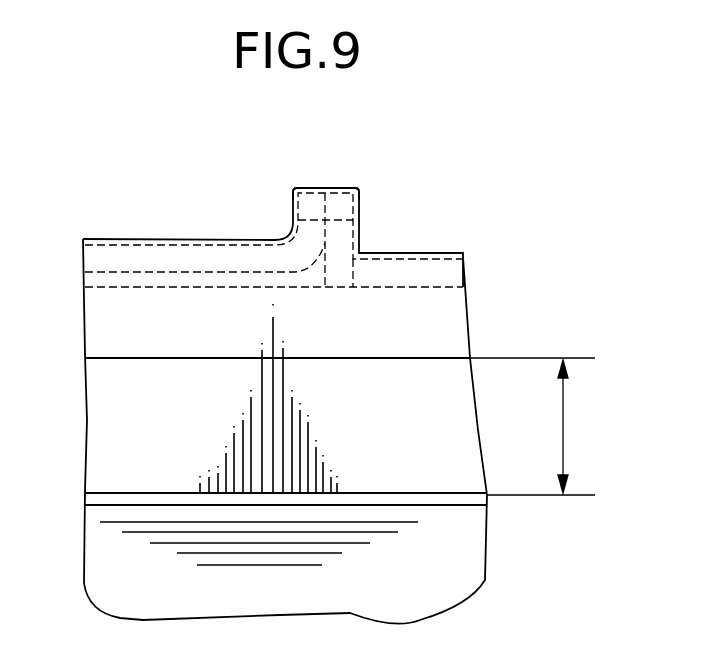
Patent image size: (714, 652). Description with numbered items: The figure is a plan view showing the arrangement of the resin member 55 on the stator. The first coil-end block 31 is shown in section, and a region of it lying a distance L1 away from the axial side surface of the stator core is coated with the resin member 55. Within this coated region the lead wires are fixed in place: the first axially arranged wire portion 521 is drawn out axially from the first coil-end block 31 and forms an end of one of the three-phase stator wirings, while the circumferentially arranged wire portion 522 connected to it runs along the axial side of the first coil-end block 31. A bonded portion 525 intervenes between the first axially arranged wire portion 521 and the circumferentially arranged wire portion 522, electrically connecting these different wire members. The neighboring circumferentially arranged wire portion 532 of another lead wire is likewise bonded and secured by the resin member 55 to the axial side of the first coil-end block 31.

The first coil-end block 31 is at (103, 385).
The resin member 55 is at (183, 247).
The first axially arranged wire portion 521 is at (338, 252).
The circumferentially arranged wire portion 522 is at (113, 258).
The bonded portion 525 is at (331, 185).
The circumferentially arranged wire portion 532 is at (440, 272).
The distance L1 is at (537, 426).